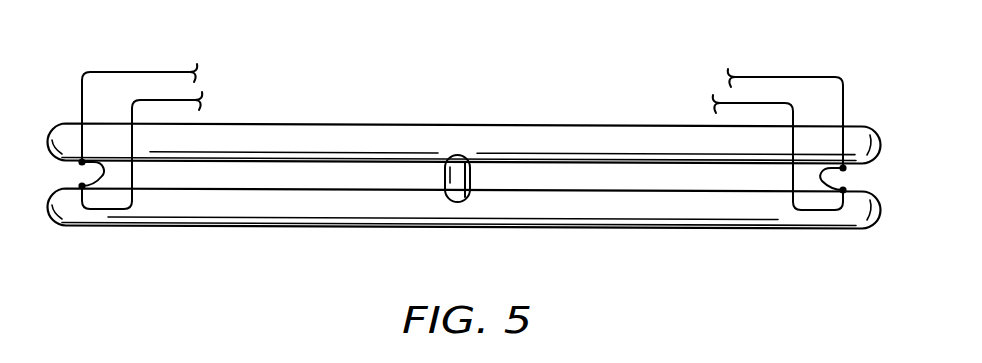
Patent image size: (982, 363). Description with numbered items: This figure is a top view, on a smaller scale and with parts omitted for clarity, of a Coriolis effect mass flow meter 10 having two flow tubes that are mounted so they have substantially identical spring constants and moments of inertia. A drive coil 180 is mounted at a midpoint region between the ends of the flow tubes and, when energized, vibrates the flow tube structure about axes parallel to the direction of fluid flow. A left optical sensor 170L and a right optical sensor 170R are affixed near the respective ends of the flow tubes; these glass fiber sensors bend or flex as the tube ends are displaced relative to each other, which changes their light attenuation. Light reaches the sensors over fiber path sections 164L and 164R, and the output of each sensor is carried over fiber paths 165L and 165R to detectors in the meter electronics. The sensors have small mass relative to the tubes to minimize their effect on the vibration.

The Coriolis effect mass flow meter 10 is at (518, 118).
The fiber path section 164L is at (142, 72).
The fiber path 165L is at (181, 100).
The left optical sensor 170L is at (104, 174).
The fiber path section 164R is at (786, 77).
The fiber path 165R is at (756, 103).
The right optical sensor 170R is at (820, 178).
The drive coil 180 is at (444, 173).